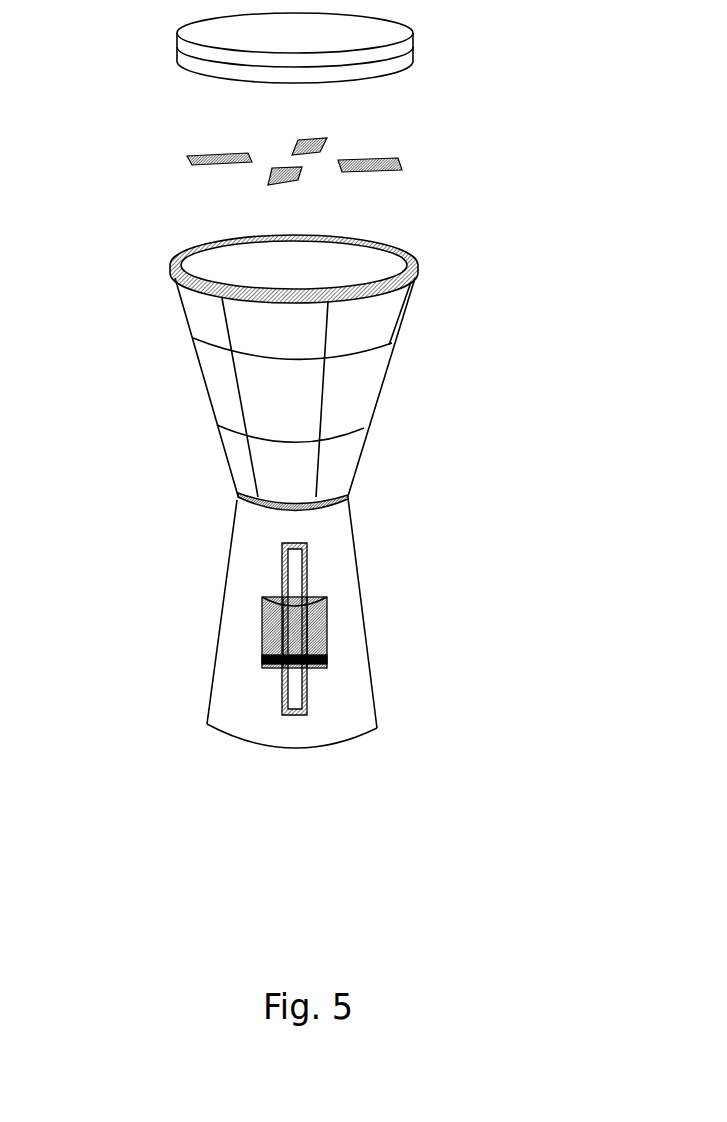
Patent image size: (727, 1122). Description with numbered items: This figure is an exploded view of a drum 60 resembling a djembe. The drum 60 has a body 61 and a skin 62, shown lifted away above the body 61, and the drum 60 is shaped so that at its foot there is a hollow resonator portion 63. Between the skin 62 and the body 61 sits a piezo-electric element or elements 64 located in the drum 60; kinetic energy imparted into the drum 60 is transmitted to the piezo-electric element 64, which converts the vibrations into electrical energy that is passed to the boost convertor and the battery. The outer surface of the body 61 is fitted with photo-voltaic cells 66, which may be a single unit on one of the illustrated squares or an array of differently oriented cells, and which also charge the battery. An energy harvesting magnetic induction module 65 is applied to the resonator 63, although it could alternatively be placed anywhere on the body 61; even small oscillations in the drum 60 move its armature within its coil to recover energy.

The drum 60 is at (306, 491).
The body 61 is at (167, 277).
The skin 62 is at (167, 52).
The hollow resonator portion 63 is at (230, 542).
The piezo-electric element 64 is at (177, 162).
The magnetic induction module 65 is at (262, 637).
The photo-voltaic cells 66 is at (232, 410).